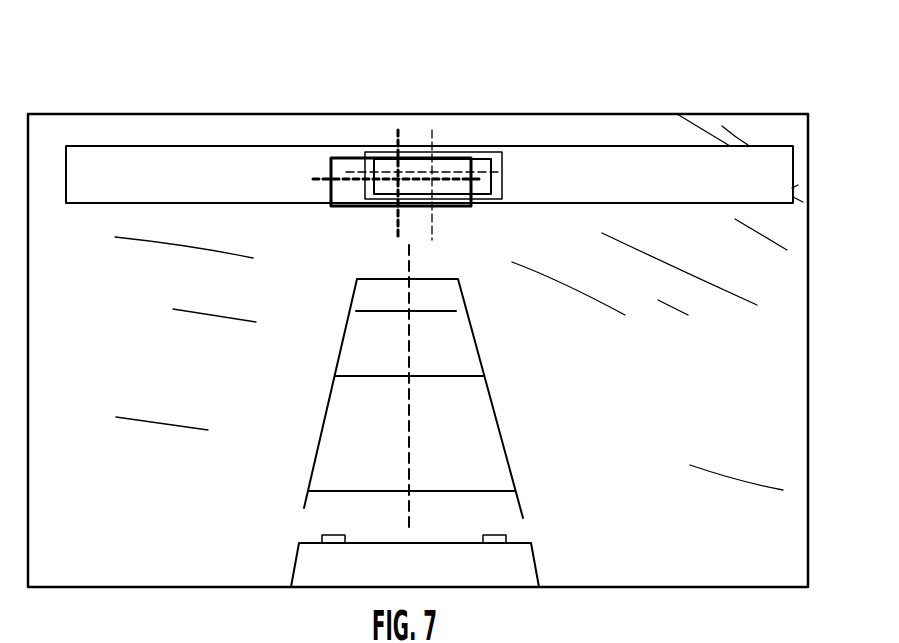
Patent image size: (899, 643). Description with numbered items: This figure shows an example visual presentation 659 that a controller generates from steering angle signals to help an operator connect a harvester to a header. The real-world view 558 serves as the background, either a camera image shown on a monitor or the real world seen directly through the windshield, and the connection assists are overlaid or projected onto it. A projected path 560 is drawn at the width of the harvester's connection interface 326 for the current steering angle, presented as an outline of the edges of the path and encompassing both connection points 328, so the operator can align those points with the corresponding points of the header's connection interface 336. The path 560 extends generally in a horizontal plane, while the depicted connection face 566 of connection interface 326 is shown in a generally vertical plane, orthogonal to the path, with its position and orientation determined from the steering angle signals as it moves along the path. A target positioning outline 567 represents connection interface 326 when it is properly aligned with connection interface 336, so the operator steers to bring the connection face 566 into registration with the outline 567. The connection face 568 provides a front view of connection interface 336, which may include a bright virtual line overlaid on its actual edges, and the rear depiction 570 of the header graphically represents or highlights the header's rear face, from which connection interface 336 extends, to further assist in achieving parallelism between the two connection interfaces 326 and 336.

The visual presentation 659 is at (808, 167).
The real-world view 558 is at (767, 268).
The rear depiction of header 570 is at (693, 146).
The connection face 566 is at (347, 157).
The target positioning outline 567 is at (505, 157).
The connection interface 336 is at (486, 157).
The connection face 568 is at (502, 180).
The projected path 560 is at (503, 437).
The connection interface 326 is at (541, 570).
The connection points 328 is at (325, 536).